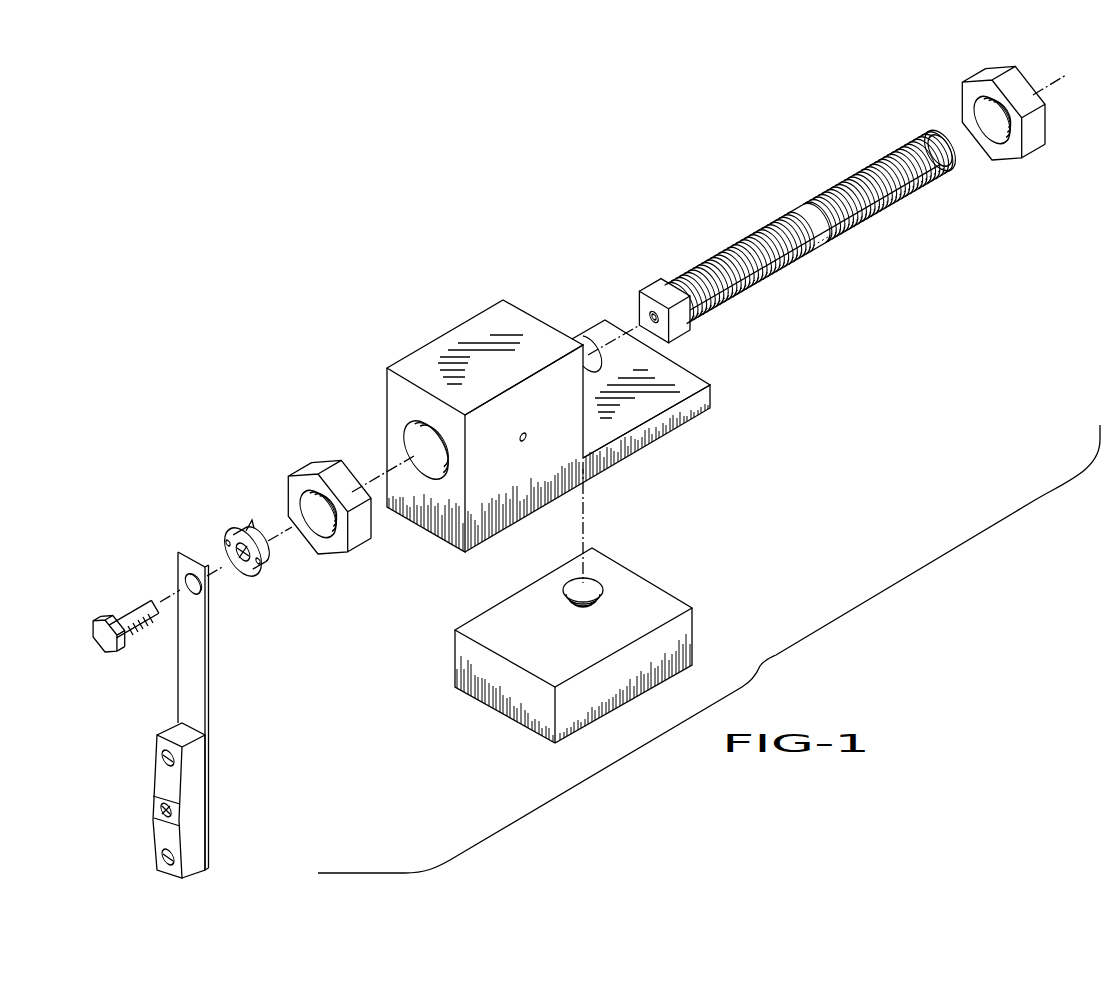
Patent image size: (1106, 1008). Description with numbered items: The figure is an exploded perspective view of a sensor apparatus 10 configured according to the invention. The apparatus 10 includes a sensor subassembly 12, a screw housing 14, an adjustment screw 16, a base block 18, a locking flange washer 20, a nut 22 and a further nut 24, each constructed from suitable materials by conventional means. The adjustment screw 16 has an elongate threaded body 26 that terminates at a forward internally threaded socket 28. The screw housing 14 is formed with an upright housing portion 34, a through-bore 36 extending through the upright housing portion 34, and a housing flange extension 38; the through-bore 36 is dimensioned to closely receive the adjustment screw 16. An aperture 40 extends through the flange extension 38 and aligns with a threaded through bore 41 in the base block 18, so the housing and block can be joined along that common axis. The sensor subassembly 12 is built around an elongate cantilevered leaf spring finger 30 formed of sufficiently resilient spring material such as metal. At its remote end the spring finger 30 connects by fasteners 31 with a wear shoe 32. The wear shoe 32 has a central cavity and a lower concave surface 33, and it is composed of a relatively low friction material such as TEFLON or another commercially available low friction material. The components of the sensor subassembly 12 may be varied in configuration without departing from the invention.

The sensor apparatus 10 is at (405, 210).
The sensor subassembly 12 is at (213, 881).
The screw housing 14 is at (445, 331).
The adjustment screw 16 is at (751, 175).
The base block 18 is at (703, 620).
The locking flange washer 20 is at (231, 520).
The nut 22 is at (356, 542).
The nut 24 is at (1035, 151).
The elongate threaded body 26 is at (763, 279).
The forward internally threaded socket 28 is at (650, 287).
The cantilevered leaf spring finger 30 is at (192, 664).
The fasteners 31 is at (162, 763).
The wear shoe 32 is at (195, 848).
The lower concave surface 33 is at (160, 783).
The upright housing portion 34 is at (542, 453).
The through-bore 36 is at (410, 438).
The housing flange extension 38 is at (704, 402).
The aperture 40 is at (596, 338).
The threaded through bore 41 is at (600, 585).